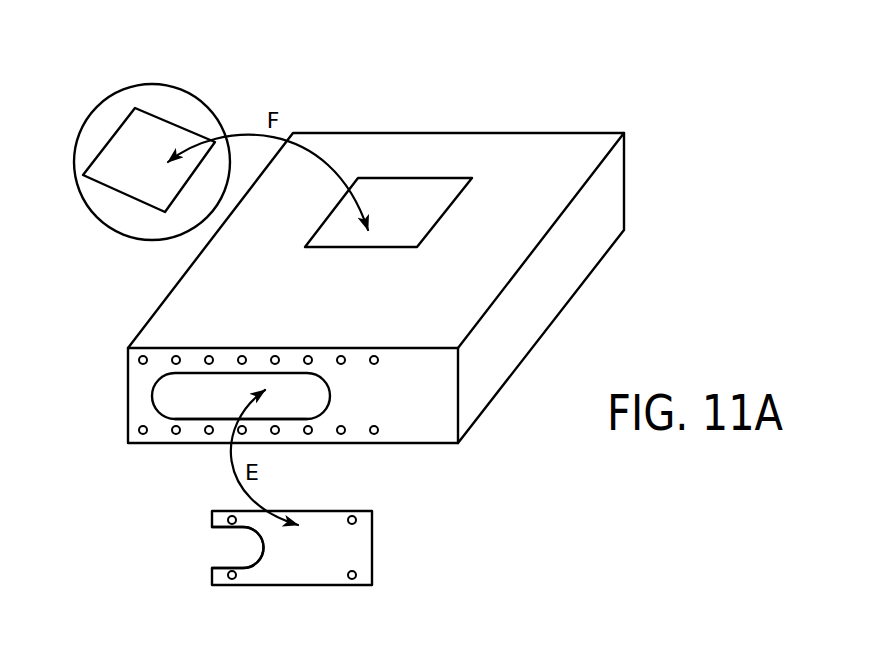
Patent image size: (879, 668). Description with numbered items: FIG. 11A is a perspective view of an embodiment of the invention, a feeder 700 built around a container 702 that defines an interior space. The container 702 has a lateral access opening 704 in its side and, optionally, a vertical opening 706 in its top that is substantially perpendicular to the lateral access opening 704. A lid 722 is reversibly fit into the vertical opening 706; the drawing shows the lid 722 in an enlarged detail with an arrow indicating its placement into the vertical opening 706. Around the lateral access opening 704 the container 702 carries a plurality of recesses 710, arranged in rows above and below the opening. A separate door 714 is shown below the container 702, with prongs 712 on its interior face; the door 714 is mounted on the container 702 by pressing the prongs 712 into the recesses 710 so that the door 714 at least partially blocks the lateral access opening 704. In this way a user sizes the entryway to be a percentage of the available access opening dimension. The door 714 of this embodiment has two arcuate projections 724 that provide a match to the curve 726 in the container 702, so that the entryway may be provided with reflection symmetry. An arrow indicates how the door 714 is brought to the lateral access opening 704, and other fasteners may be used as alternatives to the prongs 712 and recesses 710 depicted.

The feeder 700 is at (647, 200).
The container 702 is at (498, 160).
The lateral access opening 704 is at (155, 406).
The vertical opening 706 is at (408, 202).
The recesses 710 is at (378, 360).
The prongs 712 is at (356, 520).
The door 714 is at (281, 575).
The lid 722 is at (178, 88).
The arcuate projections 724 is at (212, 522).
The curve 726 is at (171, 408).